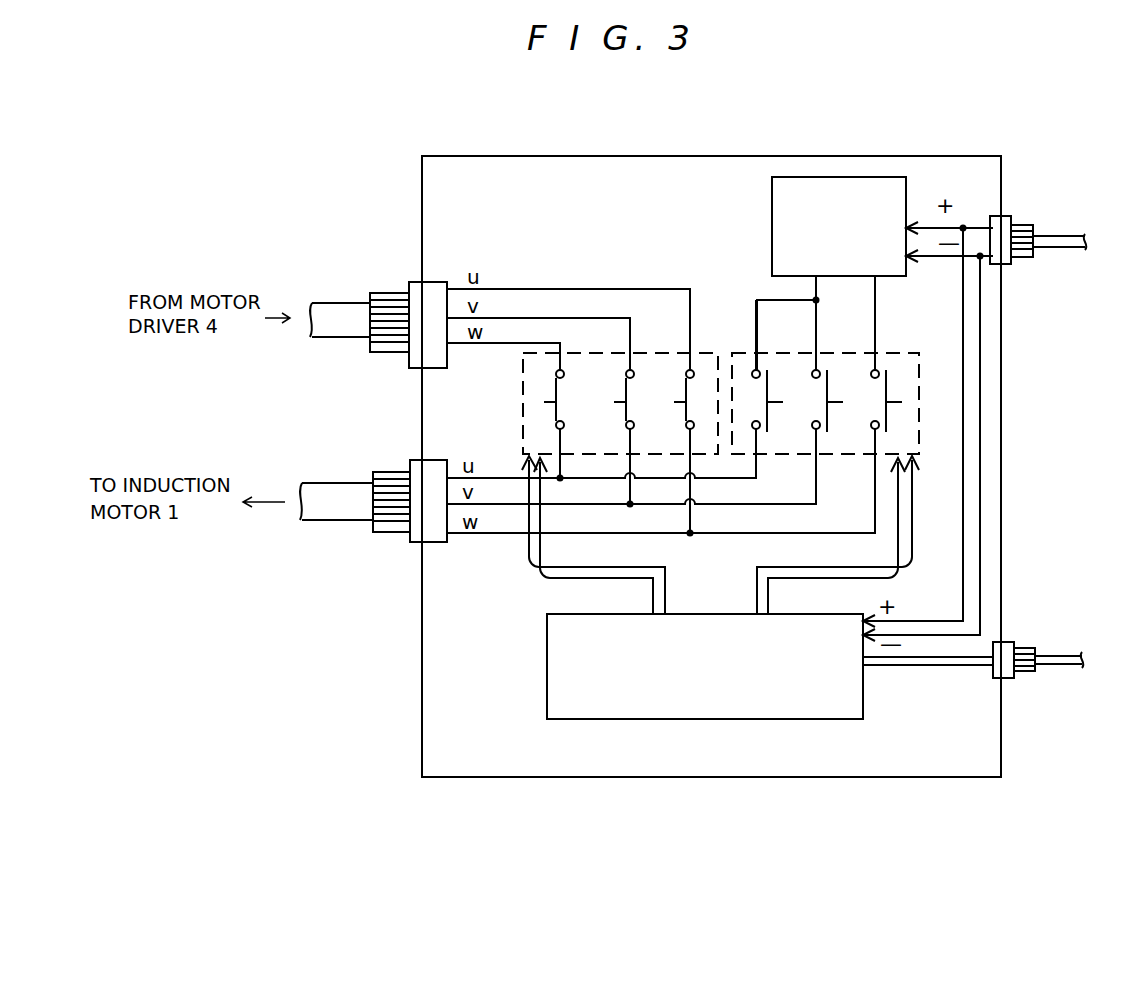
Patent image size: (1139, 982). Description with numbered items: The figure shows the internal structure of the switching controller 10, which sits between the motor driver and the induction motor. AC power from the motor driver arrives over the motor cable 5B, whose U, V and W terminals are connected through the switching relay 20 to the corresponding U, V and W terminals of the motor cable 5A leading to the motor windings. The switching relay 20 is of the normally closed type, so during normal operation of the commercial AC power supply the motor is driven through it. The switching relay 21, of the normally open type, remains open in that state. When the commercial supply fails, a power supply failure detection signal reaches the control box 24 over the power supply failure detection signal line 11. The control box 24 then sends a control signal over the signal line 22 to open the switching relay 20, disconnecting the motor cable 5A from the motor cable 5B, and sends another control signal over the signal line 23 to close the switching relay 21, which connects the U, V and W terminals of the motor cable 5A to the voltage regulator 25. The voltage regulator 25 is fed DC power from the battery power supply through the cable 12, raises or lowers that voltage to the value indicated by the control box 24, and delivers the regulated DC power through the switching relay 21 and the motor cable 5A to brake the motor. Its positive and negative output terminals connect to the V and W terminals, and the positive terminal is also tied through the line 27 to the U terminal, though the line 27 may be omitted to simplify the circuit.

The switching controller 10 is at (812, 154).
The motor cable 5A is at (360, 510).
The motor cable 5B is at (354, 300).
The switching relay 20 is at (522, 390).
The switching relay 21 is at (920, 455).
The signal line 22 is at (527, 575).
The signal line 23 is at (916, 568).
The control box 24 is at (546, 672).
The voltage regulator 25 is at (771, 195).
The line 27 is at (756, 300).
The power supply failure detection signal line 11 is at (1055, 676).
The cable 12 is at (1052, 265).